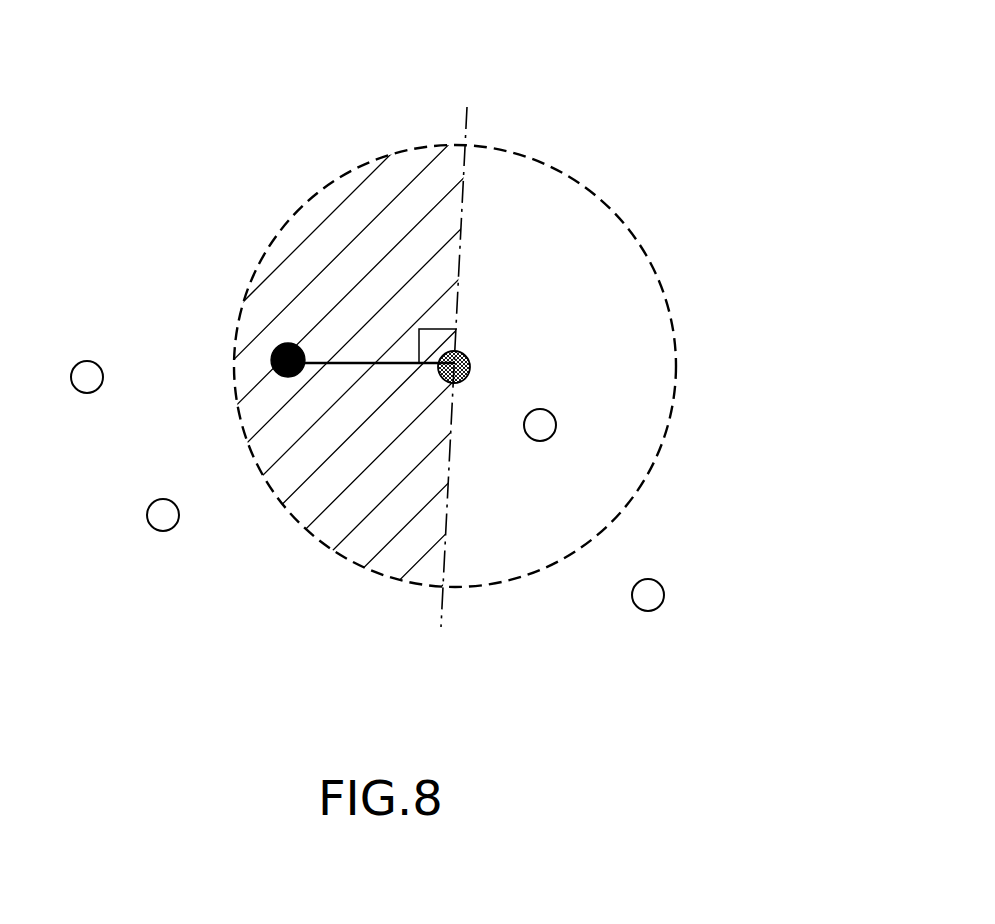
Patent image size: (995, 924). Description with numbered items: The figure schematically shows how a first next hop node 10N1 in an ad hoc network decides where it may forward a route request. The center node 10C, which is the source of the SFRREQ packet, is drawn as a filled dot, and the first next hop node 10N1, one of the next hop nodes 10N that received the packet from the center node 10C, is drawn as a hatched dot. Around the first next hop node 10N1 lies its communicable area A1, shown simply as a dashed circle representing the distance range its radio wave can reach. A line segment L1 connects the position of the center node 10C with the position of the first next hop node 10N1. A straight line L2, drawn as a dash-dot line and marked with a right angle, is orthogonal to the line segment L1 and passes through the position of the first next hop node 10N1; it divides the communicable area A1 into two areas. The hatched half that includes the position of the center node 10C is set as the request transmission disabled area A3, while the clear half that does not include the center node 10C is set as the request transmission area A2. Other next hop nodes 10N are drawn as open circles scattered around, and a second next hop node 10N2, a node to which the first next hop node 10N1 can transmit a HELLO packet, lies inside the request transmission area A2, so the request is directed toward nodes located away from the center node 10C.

The communicable area A1 is at (552, 57).
The request transmission area A2 is at (528, 172).
The request transmission disabled area A3 is at (405, 173).
The line segment L1 is at (393, 364).
The straight line L2 is at (442, 614).
The center node 10C is at (272, 358).
The next hop node 10N is at (87, 393).
The first next hop node 10N1 is at (470, 362).
The second next hop node 10N2 is at (537, 441).